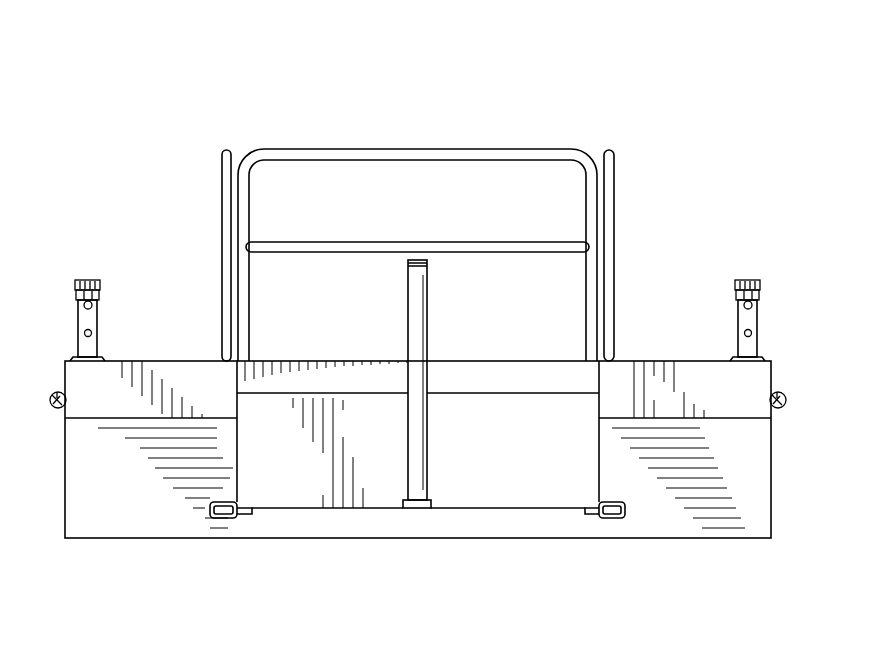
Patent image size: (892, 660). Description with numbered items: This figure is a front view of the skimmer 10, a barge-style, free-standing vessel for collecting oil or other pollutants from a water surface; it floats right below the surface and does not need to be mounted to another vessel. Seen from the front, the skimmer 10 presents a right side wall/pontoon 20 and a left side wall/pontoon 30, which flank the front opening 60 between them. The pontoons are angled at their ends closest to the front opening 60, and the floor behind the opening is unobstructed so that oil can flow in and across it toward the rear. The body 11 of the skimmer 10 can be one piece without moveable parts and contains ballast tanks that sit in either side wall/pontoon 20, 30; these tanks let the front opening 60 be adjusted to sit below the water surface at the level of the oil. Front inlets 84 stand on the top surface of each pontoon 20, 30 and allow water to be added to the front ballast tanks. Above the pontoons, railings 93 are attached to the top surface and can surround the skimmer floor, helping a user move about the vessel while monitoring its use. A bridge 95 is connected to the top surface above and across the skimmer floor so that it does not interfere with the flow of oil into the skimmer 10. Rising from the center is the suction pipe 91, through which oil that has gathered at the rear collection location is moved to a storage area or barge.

The skimmer 10 is at (596, 100).
The body 11 is at (172, 515).
The right side wall/pontoon 20 is at (65, 497).
The left side wall/pontoon 30 is at (773, 455).
The front opening 60 is at (510, 488).
The front inlet 84 is at (78, 337).
The suction pipe 91 is at (417, 313).
The railings 93 is at (222, 178).
The bridge 95 is at (372, 388).